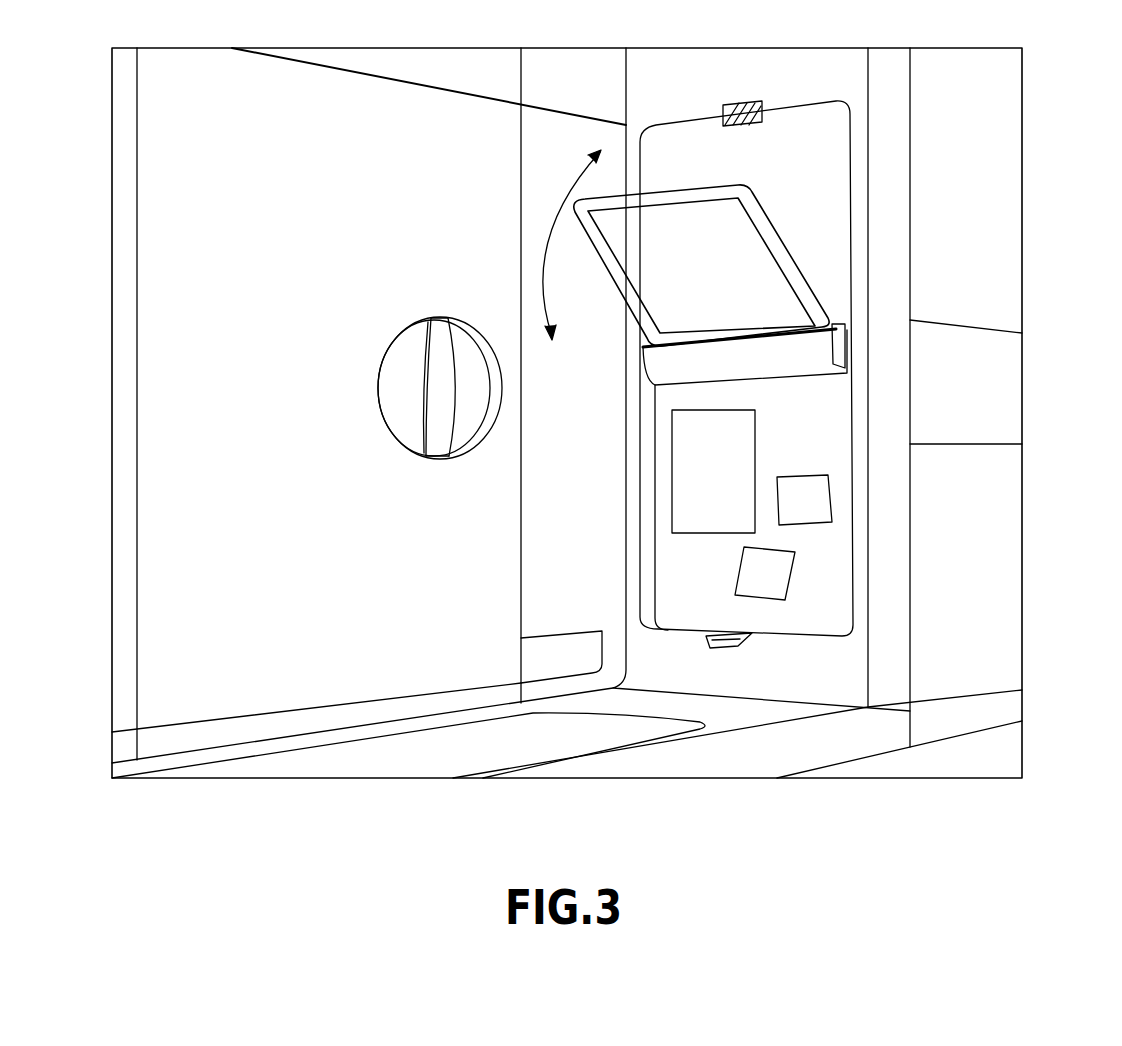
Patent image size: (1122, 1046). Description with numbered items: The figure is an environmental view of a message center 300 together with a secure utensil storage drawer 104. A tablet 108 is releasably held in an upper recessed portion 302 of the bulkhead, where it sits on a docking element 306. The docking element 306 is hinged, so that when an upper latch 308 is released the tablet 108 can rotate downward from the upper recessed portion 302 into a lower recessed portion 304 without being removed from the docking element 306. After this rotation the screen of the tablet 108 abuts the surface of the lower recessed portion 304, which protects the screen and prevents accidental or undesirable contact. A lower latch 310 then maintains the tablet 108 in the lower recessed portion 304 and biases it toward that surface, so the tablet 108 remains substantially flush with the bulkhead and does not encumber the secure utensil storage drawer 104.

The secure utensil storage drawer 104 is at (566, 133).
The tablet 108 is at (780, 245).
The message center 300 is at (880, 300).
The upper recessed portion 302 is at (845, 110).
The lower recessed portion 304 is at (822, 432).
The docking element 306 is at (822, 355).
The upper latch 308 is at (745, 110).
The lower latch 310 is at (735, 650).